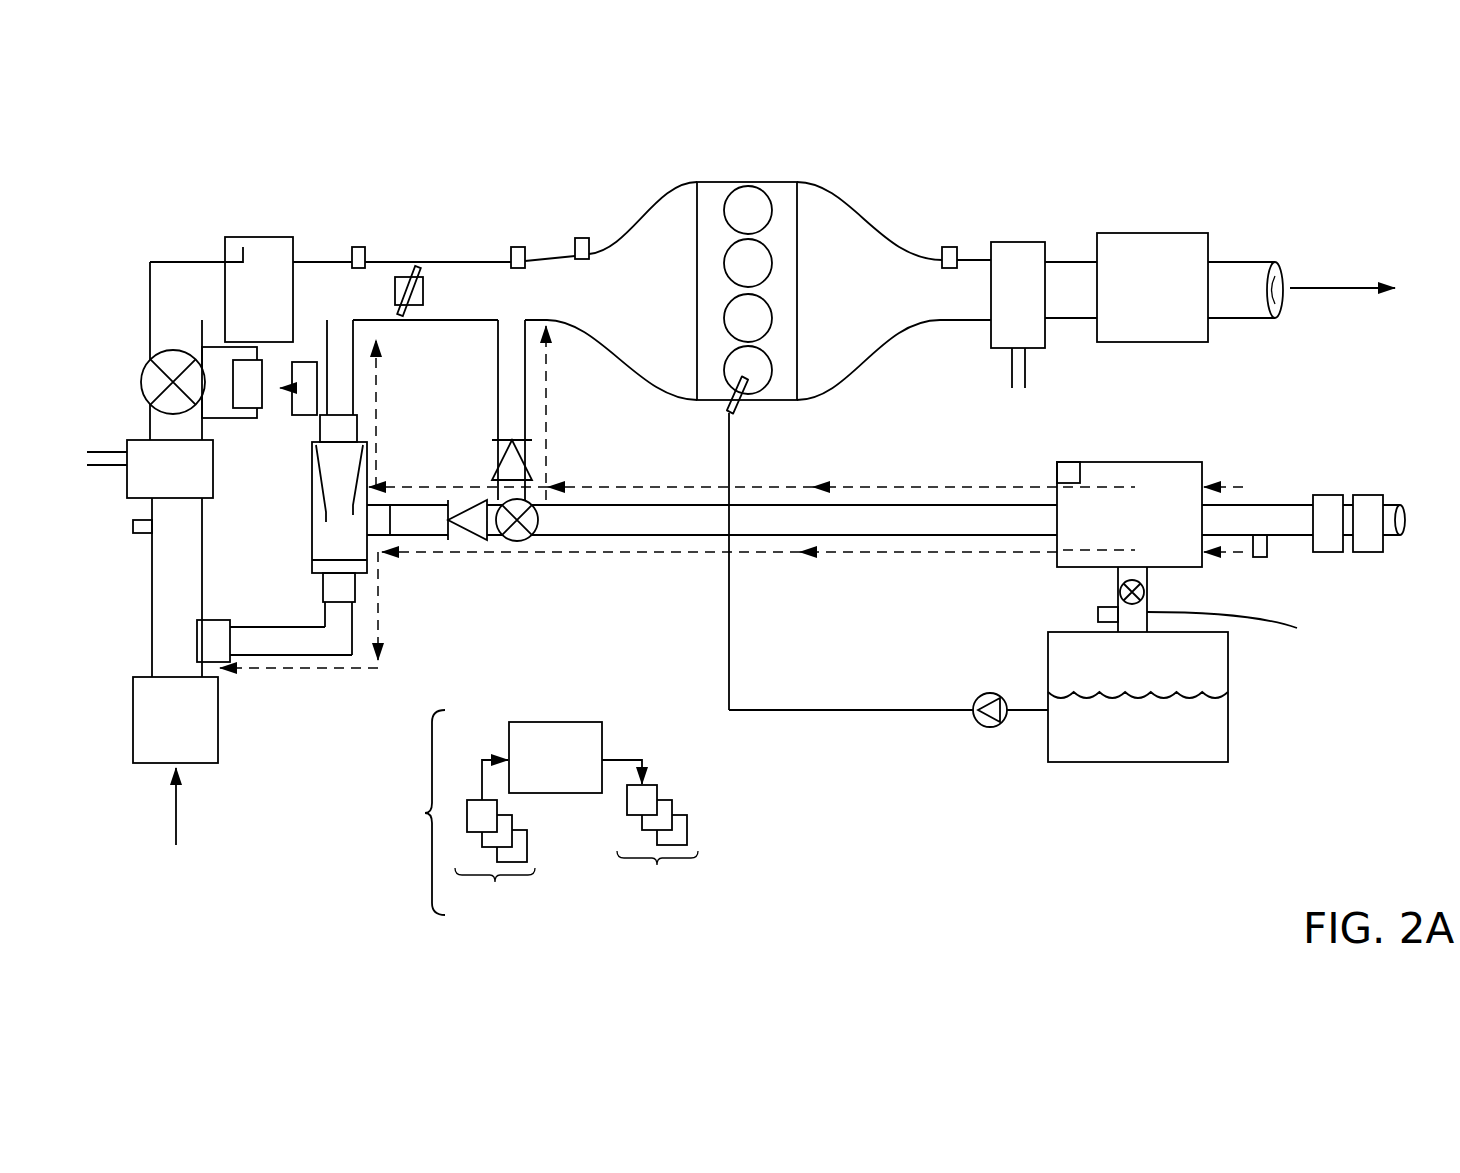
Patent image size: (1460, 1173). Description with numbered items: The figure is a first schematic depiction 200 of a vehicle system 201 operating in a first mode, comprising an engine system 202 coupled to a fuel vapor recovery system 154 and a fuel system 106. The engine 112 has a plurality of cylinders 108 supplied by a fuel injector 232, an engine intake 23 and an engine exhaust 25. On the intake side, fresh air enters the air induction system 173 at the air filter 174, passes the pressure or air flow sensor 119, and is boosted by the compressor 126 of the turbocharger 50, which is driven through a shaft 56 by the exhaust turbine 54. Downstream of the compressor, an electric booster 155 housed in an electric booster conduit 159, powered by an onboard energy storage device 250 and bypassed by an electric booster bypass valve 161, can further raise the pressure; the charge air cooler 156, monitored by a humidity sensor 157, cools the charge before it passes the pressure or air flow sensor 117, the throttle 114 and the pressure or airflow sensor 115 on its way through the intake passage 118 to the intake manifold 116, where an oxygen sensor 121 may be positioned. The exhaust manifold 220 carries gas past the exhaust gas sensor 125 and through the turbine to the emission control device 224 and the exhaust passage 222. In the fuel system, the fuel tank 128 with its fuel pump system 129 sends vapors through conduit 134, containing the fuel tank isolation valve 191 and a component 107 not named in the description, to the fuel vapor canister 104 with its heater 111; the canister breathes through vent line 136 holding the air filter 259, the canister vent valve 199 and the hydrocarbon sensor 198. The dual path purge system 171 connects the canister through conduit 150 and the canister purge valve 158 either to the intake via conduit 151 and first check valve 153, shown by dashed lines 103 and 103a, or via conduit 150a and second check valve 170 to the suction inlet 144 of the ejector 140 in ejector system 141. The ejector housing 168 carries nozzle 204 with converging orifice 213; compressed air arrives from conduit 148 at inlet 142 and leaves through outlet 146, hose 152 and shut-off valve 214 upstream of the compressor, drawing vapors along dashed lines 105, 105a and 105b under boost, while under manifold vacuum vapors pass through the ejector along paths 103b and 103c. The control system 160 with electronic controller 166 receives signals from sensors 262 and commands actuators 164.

The first schematic depiction 200 is at (258, 163).
The vehicle system 201 is at (510, 181).
The engine system 202 is at (975, 162).
The intake passage 118 is at (168, 301).
The charge air cooler 156 is at (242, 308).
The humidity sensor 157 is at (244, 248).
The pressure or air flow sensor 117 is at (359, 247).
The pressure or airflow sensor 115 is at (518, 247).
The oxygen sensor 121 is at (582, 238).
The engine intake manifold 116 is at (606, 299).
The throttle 114 is at (413, 297).
The cylinders 108 is at (798, 270).
The exhaust manifold 220 is at (851, 301).
The engine 112 is at (870, 222).
The engine exhaust 25 is at (865, 362).
The exhaust gas sensor 125 is at (950, 247).
The exhaust turbine 54 is at (1044, 315).
The shaft 56 is at (120, 452).
The turbocharger 50 is at (1048, 355).
The emission control device 224 is at (1143, 233).
The exhaust passage 222 is at (1228, 262).
The electric booster bypass valve 161 is at (152, 360).
The electric booster conduit 159 is at (212, 418).
The electric booster 155 is at (262, 407).
The onboard energy storage device 250 is at (305, 415).
The first port 142 is at (358, 418).
The nozzle 204 is at (313, 485).
The housing 168 is at (310, 508).
The ejector 140 is at (318, 532).
The orifice 213 is at (338, 508).
The conduit or hose 152 is at (299, 650).
The compressor 126 is at (170, 558).
The pressure or air flow sensor 119 is at (133, 527).
The air induction system 173 is at (137, 648).
The air filter 174 is at (158, 733).
The conduit 151 is at (493, 333).
The first check valve 153 is at (497, 442).
The dashed line 103a is at (547, 442).
The engine intake 23 is at (612, 348).
The fuel injector 232 is at (742, 404).
The conduit 150a is at (396, 529).
The second check valve 170 is at (468, 518).
The conduit 150 is at (631, 529).
The canister purge valve 158 is at (540, 498).
The dashed line 103 is at (615, 487).
The dashed line 103b is at (385, 480).
The dashed line 103c is at (378, 385).
The conduit 148 is at (381, 334).
The dashed line 105 is at (757, 553).
The dashed line 105a is at (380, 642).
The dashed line 105b is at (293, 670).
The second port 144 is at (405, 552).
The third port 146 is at (357, 585).
The shut-off valve 214 is at (377, 580).
The ejector system 141 is at (328, 682).
The dual path purge system 171 is at (622, 562).
The fuel vapor recovery system 154 is at (878, 594).
The fuel vapor canister 104 is at (1170, 462).
The heater 111 is at (1080, 477).
The vent line 136 is at (1228, 533).
The canister vent valve 199 is at (1320, 495).
The air filter 259 is at (1375, 495).
The hydrocarbon sensor 198 is at (1260, 558).
The fuel tank isolation valve 191 is at (1145, 592).
The fuel tank pressure sensor 107 is at (1098, 611).
The conduit 134 is at (1229, 631).
The fuel tank 128 is at (1230, 738).
The fuel system 106 is at (1145, 782).
The fuel pump system 129 is at (991, 693).
The control system 160 is at (425, 813).
The electronic controller 166 is at (562, 761).
The sensors 262 is at (495, 854).
The actuators 164 is at (657, 837).